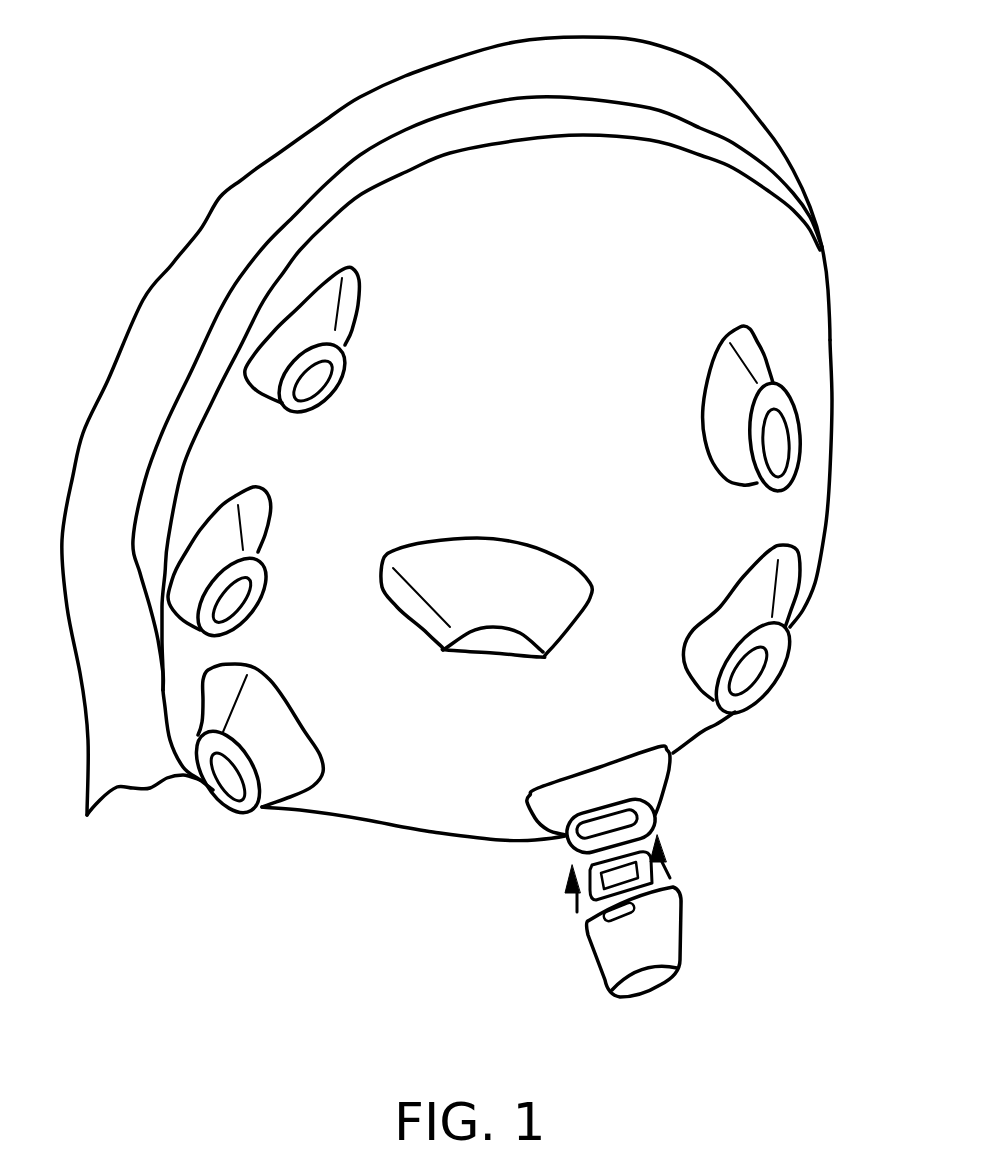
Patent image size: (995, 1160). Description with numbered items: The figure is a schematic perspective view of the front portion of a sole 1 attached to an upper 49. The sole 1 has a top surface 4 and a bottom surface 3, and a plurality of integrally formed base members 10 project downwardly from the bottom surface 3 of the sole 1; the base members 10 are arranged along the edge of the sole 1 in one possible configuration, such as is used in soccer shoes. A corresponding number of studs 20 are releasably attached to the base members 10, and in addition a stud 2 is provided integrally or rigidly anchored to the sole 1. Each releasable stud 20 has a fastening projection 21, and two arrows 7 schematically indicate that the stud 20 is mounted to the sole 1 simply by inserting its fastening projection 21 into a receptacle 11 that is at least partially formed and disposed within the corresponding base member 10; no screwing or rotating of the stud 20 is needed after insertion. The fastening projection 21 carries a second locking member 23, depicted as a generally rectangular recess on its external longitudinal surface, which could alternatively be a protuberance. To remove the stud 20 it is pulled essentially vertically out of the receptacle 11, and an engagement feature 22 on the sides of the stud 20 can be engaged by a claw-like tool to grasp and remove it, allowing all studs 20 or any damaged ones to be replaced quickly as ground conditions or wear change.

The sole 1 is at (232, 194).
The upper 49 is at (422, 67).
The top surface 4 is at (130, 547).
The bottom surface 3 is at (800, 295).
The stud 2 is at (533, 547).
The base member 10 is at (411, 580).
The receptacle 11 is at (572, 848).
The arrows 7 is at (667, 863).
The stud 20 is at (654, 944).
The fastening projection 21 is at (629, 907).
The engagement feature 22 is at (610, 902).
The second locking member 23 is at (600, 890).